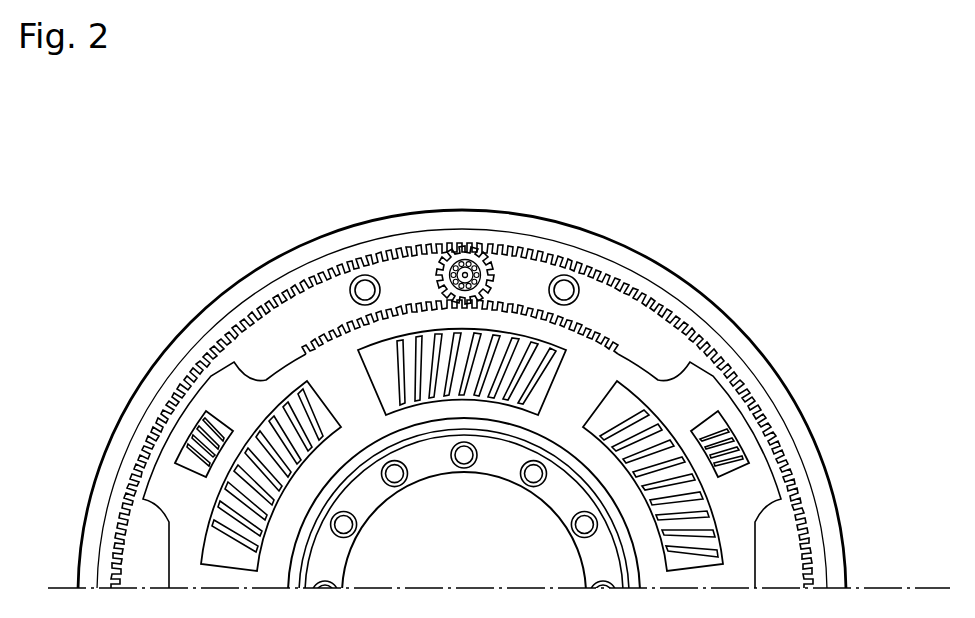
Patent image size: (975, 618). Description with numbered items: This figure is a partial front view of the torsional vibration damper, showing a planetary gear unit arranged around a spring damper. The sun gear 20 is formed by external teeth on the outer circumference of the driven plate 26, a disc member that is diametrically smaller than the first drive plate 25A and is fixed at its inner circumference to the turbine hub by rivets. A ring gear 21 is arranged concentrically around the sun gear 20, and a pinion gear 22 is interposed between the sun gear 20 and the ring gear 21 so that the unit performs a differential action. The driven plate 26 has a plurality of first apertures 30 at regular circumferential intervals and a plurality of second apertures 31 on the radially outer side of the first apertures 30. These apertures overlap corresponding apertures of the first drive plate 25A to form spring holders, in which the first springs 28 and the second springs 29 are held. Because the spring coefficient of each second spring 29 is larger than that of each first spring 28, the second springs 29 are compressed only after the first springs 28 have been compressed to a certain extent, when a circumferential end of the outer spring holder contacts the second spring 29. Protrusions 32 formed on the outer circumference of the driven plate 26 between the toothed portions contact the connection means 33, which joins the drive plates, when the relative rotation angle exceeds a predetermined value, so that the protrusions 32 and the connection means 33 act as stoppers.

The sun gear 20 is at (610, 328).
The ring gear 21 is at (698, 330).
The pinion gear 22 is at (497, 276).
The first drive plate 25A is at (787, 562).
The driven plate 26 is at (456, 413).
The first spring 28 is at (373, 347).
The second spring 29 is at (185, 443).
The first aperture 30 is at (410, 338).
The second aperture 31 is at (197, 420).
The protrusion 32 is at (165, 487).
The connection means 33 is at (364, 275).